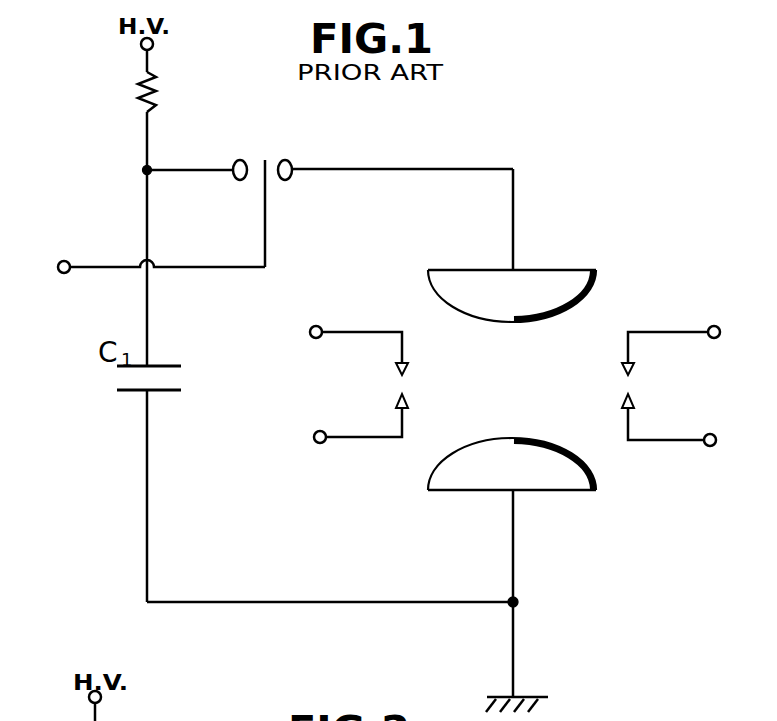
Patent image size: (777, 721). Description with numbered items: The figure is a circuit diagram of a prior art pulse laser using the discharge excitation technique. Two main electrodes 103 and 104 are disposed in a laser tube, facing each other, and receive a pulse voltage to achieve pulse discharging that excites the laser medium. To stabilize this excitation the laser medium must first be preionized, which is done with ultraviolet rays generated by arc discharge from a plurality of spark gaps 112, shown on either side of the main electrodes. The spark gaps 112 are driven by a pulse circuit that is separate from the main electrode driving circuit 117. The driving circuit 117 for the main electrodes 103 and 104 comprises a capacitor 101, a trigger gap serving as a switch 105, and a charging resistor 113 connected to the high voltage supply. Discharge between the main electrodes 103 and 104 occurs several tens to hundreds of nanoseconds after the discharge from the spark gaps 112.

The capacitor 101 is at (141, 398).
The main electrode 103 is at (594, 278).
The main electrode 104 is at (578, 460).
The trigger gap 105 is at (265, 158).
The spark gaps 112 is at (400, 389).
The charging resistor 113 is at (135, 88).
The main electrode driving circuit 117 is at (120, 470).